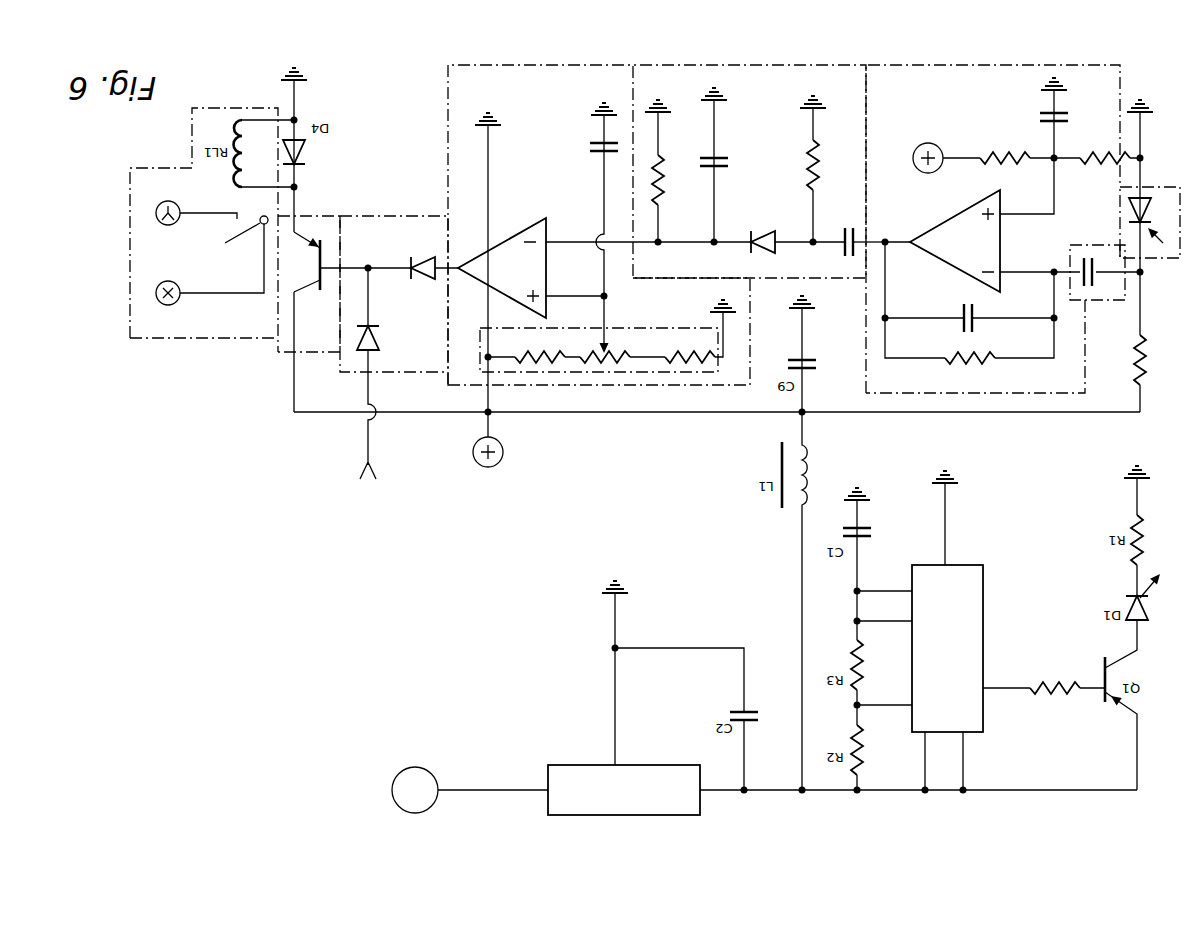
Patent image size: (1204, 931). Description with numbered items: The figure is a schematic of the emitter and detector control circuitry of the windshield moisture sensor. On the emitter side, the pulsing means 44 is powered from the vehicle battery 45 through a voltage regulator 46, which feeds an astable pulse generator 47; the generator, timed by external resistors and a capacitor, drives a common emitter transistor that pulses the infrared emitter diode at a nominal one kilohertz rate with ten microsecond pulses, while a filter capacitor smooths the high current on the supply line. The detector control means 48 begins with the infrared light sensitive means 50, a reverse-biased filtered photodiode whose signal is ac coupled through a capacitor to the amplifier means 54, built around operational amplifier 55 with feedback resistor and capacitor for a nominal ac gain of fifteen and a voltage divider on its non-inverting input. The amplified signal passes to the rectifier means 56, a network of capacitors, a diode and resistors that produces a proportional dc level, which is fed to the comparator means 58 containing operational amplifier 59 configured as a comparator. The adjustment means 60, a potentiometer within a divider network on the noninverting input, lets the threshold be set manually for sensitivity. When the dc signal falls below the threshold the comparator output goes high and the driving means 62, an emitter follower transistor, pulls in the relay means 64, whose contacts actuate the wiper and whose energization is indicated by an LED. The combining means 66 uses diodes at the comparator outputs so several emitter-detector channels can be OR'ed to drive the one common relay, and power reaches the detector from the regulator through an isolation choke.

The pulsing means 44 is at (592, 624).
The battery 45 is at (411, 775).
The voltage regulator 46 is at (560, 768).
The astable pulse generator 47 is at (975, 575).
The detector control means 48 is at (487, 480).
The infrared light sensitive means 50 is at (1172, 262).
The amplifier means 54 is at (1001, 238).
The operational amplifier 55 is at (958, 232).
The rectifier means 56 is at (780, 280).
The comparator means 58 is at (599, 258).
The operational amplifier 59 is at (515, 256).
The adjustment means 60 is at (625, 330).
The driving means 62 is at (312, 215).
The relay means 64 is at (228, 340).
The combining means 66 is at (412, 214).